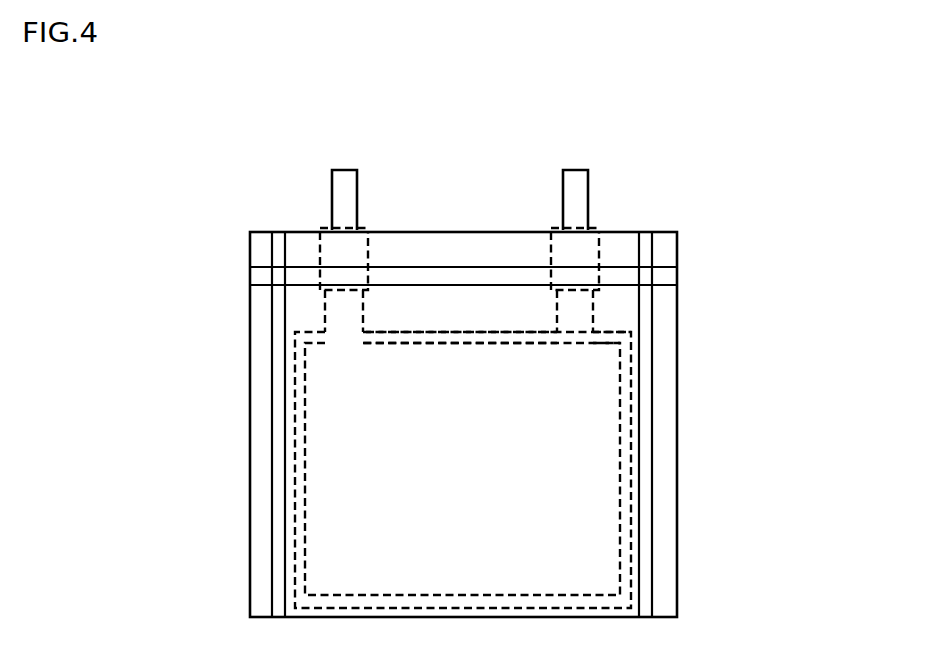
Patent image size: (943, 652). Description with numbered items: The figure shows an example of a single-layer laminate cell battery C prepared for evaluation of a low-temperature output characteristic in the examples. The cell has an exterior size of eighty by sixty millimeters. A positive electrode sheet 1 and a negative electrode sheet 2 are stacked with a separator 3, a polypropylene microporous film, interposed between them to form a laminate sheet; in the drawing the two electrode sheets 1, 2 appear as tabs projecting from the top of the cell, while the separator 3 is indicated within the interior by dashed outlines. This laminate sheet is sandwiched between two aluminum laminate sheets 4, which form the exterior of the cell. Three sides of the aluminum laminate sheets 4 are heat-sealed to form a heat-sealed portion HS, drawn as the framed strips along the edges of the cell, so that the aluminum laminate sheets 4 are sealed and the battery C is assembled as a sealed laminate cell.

The positive electrode sheet 1 is at (345, 191).
The negative electrode sheet 2 is at (577, 191).
The separator 3 is at (630, 368).
The aluminum laminate sheet 4 is at (663, 436).
The heat-sealed portion HS is at (307, 273).
The single-layer laminate cell battery C is at (464, 389).